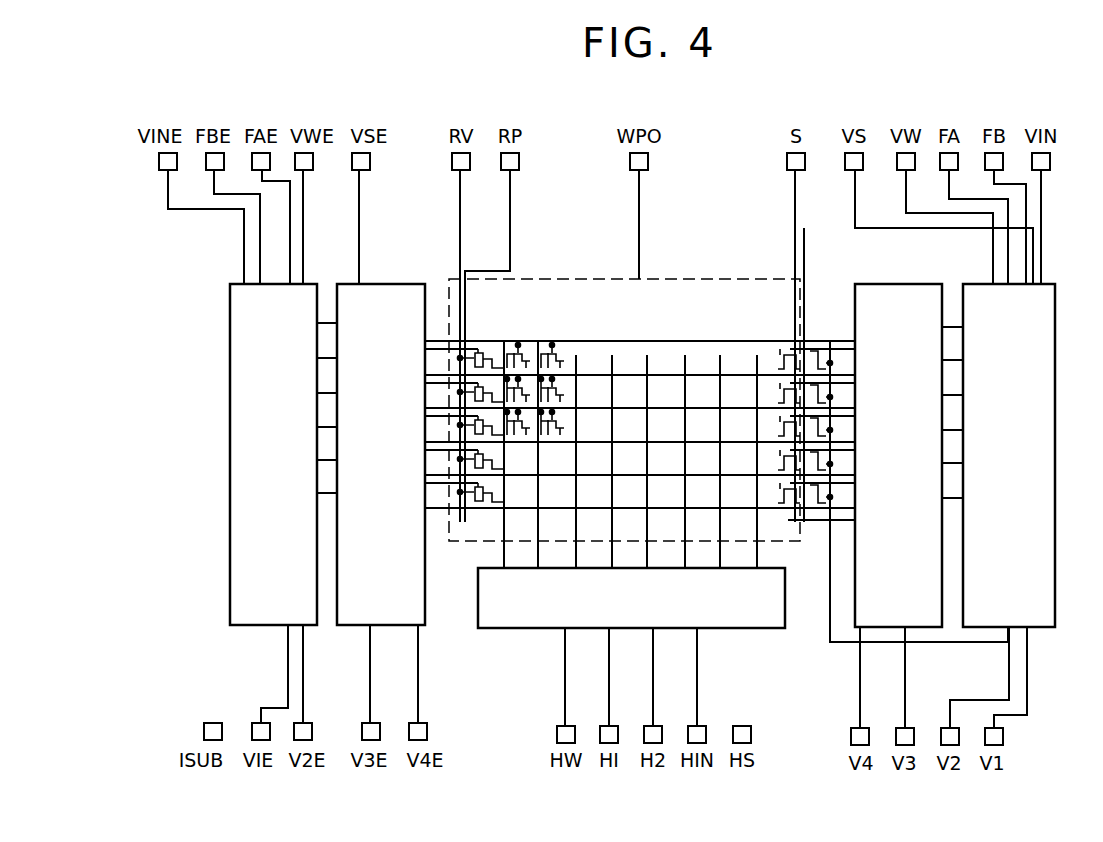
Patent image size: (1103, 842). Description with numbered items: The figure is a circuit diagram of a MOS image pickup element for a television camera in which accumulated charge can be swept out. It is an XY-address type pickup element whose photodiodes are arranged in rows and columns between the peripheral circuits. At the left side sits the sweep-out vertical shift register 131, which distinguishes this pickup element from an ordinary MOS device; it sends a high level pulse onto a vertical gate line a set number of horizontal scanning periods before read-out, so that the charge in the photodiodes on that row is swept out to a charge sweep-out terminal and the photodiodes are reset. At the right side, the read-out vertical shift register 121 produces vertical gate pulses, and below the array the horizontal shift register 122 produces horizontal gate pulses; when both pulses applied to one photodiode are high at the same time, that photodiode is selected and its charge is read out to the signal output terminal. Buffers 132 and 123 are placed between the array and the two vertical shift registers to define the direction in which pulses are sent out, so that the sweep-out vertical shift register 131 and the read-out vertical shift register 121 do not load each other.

The sweep-out vertical shift register 131 is at (230, 613).
The buffer 132 is at (352, 625).
The horizontal shift register 122 is at (505, 628).
The buffer 123 is at (855, 613).
The read-out vertical shift register 121 is at (1045, 628).